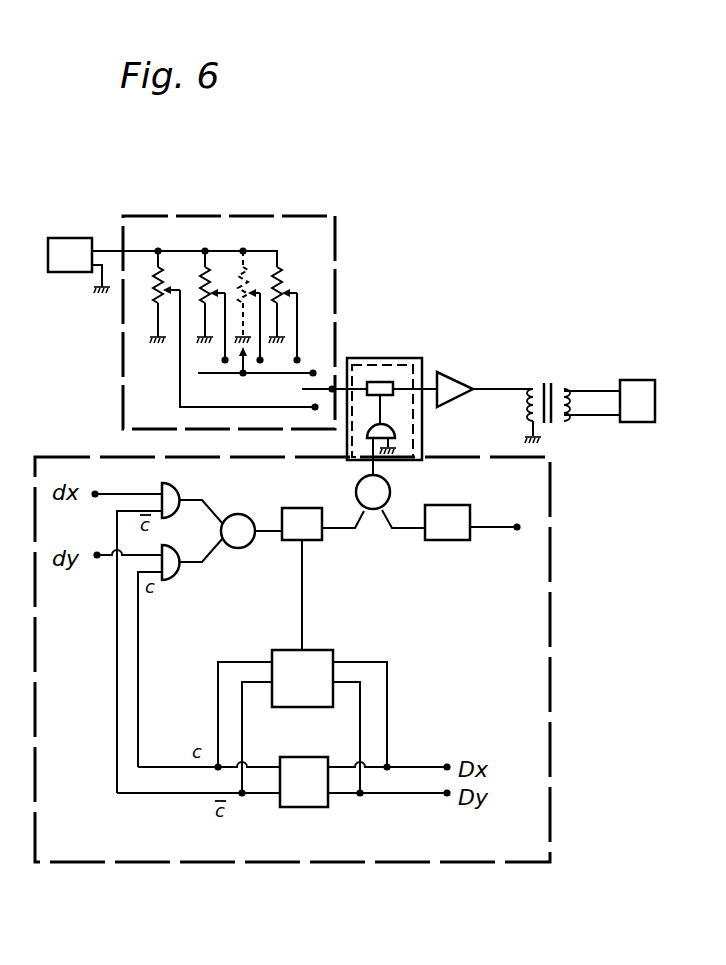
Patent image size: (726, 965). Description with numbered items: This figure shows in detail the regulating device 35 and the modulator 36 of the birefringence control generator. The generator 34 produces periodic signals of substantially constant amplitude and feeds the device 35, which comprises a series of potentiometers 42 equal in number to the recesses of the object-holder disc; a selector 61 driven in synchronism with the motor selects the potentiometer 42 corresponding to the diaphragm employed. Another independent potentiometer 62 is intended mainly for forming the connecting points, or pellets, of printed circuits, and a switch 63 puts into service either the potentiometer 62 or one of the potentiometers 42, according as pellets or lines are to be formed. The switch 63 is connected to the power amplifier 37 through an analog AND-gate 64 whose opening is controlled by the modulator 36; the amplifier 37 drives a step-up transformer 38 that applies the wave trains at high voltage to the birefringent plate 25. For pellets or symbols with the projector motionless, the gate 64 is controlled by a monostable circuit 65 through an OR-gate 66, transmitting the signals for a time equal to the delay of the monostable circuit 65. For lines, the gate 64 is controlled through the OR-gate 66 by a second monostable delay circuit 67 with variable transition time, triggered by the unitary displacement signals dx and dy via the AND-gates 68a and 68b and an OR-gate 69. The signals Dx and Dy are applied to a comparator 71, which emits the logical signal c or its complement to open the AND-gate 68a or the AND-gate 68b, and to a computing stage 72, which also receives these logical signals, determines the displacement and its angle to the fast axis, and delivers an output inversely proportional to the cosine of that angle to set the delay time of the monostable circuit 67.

The birefringent plate 25 is at (636, 392).
The generator 34 is at (64, 247).
The device for varying the amplitude of the periodic signals 35 is at (342, 228).
The modulator 36 is at (558, 678).
The power amplifier 37 is at (445, 383).
The step-up transformer 38 is at (560, 370).
The potentiometers 42 is at (243, 282).
The selector 61 is at (241, 375).
The potentiometer 62 is at (157, 297).
The switch 63 is at (331, 362).
The analog AND-gate 64 is at (402, 352).
The monostable circuit 65 is at (446, 518).
The OR-gate 66 is at (387, 489).
The second monostable delay circuit 67 is at (297, 518).
The AND-gate 68a is at (178, 496).
The AND-gate 68b is at (165, 580).
The OR-gate 69 is at (242, 539).
The comparator 71 is at (300, 798).
The computing stage 72 is at (316, 667).